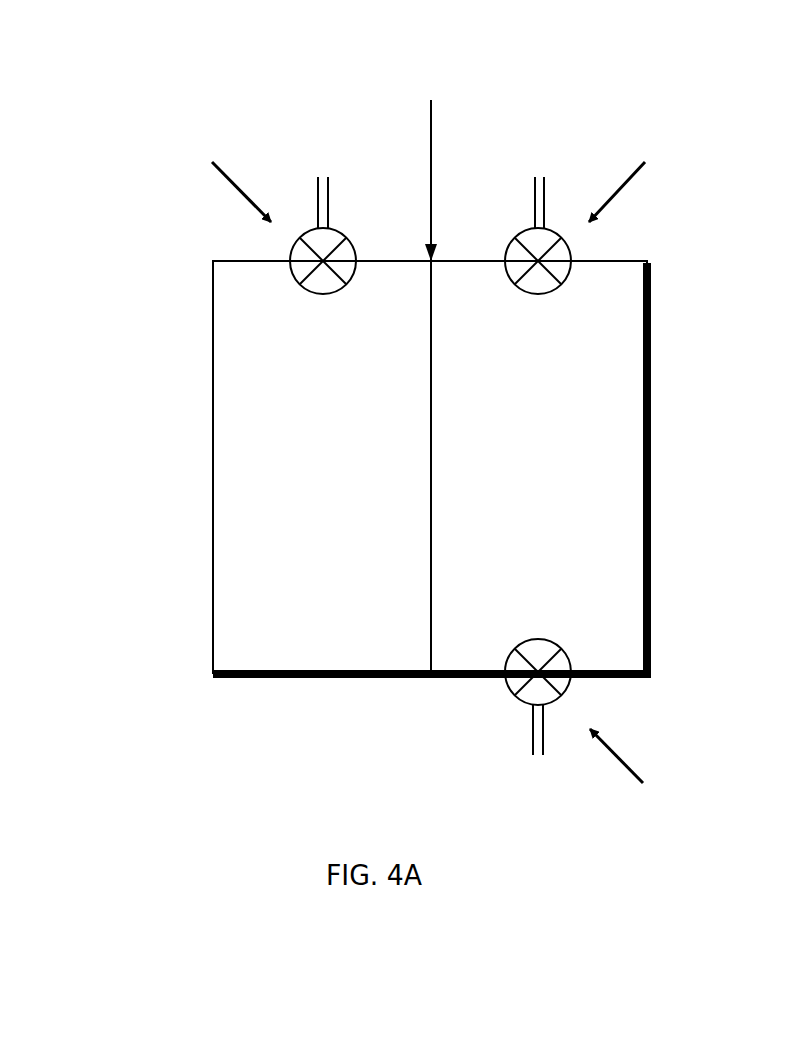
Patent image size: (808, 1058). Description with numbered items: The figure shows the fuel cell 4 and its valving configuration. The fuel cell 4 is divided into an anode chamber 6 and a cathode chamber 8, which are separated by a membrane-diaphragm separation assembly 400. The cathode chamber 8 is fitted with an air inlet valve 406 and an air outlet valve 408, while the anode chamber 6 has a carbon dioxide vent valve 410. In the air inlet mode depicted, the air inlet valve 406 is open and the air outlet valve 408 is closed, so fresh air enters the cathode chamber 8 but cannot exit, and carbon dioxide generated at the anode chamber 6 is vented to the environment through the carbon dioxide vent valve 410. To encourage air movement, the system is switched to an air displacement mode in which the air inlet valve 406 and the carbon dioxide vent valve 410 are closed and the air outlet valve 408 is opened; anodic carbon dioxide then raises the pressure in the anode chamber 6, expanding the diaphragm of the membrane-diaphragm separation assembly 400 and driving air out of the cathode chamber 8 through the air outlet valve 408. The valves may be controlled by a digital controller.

The fuel cell 4 is at (146, 325).
The anode chamber 6 is at (213, 523).
The cathode chamber 8 is at (651, 513).
The membrane-diaphragm separation assembly 400 is at (431, 422).
The air inlet valve 406 is at (527, 232).
The air outlet valve 408 is at (510, 690).
The carbon dioxide vent valve 410 is at (333, 232).